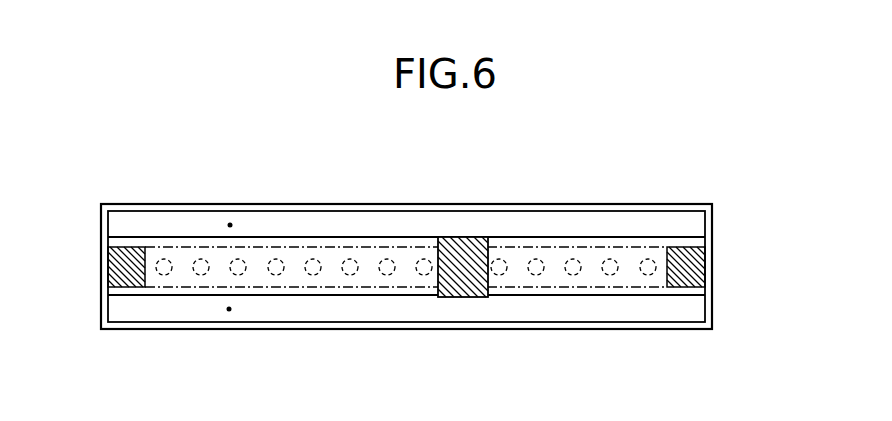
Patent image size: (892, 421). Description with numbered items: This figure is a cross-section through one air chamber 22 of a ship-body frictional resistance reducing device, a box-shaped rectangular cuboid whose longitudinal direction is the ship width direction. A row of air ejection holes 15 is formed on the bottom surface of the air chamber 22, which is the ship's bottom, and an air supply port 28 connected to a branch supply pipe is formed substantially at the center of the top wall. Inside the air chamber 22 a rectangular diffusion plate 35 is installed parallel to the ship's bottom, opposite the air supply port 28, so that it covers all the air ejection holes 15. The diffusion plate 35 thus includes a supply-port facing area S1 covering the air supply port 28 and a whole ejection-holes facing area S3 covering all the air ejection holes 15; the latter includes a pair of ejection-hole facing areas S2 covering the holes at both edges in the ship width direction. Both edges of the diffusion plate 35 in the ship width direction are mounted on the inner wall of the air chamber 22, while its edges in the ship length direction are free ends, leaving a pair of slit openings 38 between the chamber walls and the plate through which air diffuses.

The air chamber 22 is at (668, 188).
The diffusion plate 35 is at (127, 237).
The slit openings 38 is at (229, 309).
The air ejection holes 15 is at (350, 277).
The air supply port 28 is at (460, 299).
The supply-port facing area S1 is at (488, 294).
The ejection-hole facing areas S2 is at (141, 288).
The whole ejection-holes facing area S3 is at (318, 262).